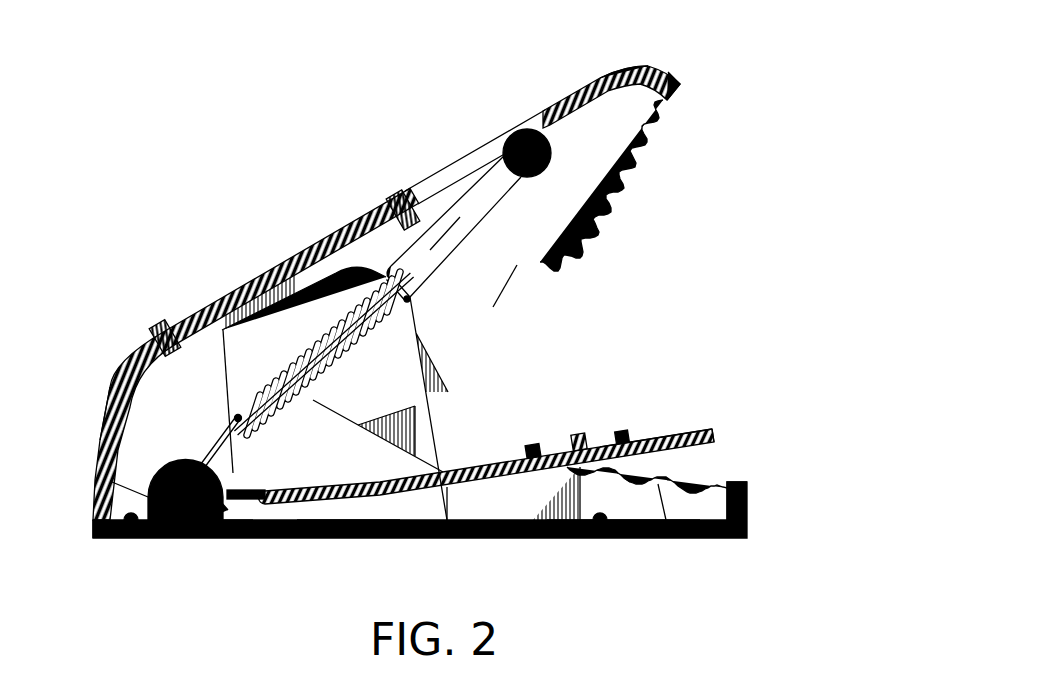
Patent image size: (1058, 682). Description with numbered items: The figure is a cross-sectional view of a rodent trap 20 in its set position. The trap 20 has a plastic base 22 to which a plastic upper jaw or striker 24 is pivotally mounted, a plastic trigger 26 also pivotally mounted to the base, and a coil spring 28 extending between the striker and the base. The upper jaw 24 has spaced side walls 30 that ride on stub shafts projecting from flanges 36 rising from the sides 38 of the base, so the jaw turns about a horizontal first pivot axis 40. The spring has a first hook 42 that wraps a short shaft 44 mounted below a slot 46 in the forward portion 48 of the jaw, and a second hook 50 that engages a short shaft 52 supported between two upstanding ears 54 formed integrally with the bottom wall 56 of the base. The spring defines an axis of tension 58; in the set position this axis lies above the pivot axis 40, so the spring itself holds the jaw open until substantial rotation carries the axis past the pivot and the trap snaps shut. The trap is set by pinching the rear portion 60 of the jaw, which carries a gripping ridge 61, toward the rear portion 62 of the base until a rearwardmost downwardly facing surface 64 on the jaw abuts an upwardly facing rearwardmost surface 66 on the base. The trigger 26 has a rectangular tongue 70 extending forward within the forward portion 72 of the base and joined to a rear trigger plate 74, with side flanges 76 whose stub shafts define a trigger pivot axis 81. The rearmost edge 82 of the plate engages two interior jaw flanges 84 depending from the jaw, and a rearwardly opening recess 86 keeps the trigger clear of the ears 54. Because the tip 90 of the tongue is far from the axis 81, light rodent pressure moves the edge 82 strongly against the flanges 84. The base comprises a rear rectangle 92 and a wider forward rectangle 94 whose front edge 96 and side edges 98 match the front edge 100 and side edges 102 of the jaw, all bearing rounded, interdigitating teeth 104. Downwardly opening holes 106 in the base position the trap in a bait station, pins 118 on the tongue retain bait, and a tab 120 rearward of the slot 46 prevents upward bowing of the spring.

The rodent trap 20 is at (372, 148).
The base 22 is at (700, 538).
The upper jaw 24 is at (600, 76).
The trigger 26 is at (536, 446).
The coil spring 28 is at (409, 281).
The side walls 30 is at (523, 236).
The flanges 36 is at (423, 414).
The sides 38 is at (487, 510).
The first pivot axis 40 is at (353, 366).
The first hook 42 is at (538, 111).
The short shaft 44 is at (523, 178).
The slot 46 is at (454, 163).
The forward portion 48 is at (572, 95).
The second hook 50 is at (186, 525).
The short shaft 52 is at (220, 512).
The upstanding ears 54 is at (166, 468).
The bottom wall 56 is at (130, 522).
The axis of tension 58 is at (447, 237).
The rear portion 60 is at (227, 298).
The horizontal ridge 61 is at (160, 325).
The rear portion 62 is at (243, 540).
The rearwardmost downwardly facing surface 64 is at (108, 428).
The upwardly facing rearwardmost surface 66 is at (95, 520).
The rectangular tongue 70 is at (637, 430).
The forward portion 72 is at (673, 493).
The rear trigger plate 74 is at (305, 487).
The side flanges 76 is at (360, 447).
The trigger pivot axis 81 is at (258, 400).
The rearmost edge 82 is at (243, 490).
The interior jaw flanges 84 is at (226, 360).
The rearwardly opening recess 86 is at (262, 490).
The tip 90 is at (712, 429).
The rear rectangle 92 is at (331, 503).
The forward rectangle 94 is at (612, 538).
The front edge 96 is at (747, 484).
The side edges 98 is at (630, 463).
The front edge 100 is at (681, 90).
The side edges 102 is at (608, 195).
The teeth 104 is at (646, 135).
The downwardly opening holes 106 is at (262, 536).
The pins 118 is at (579, 435).
The tab 120 is at (375, 228).